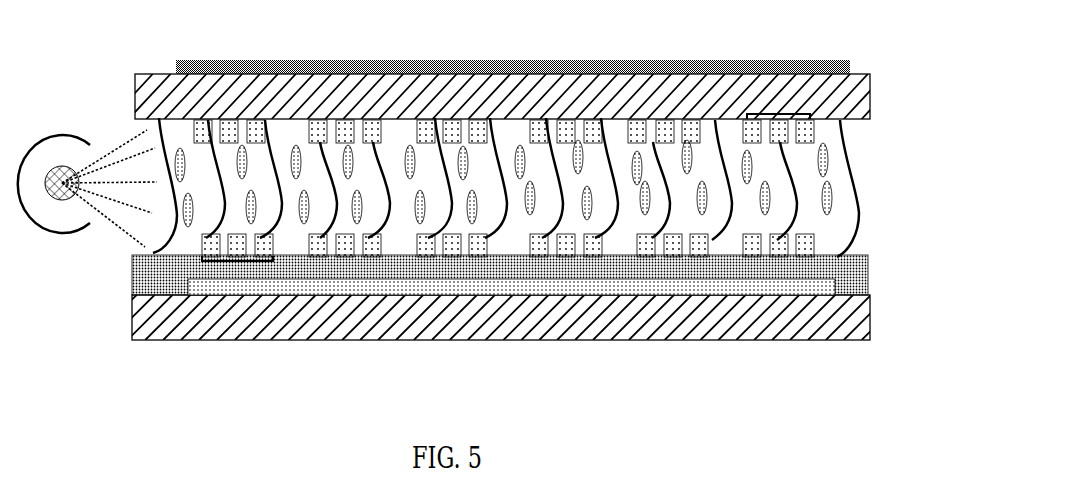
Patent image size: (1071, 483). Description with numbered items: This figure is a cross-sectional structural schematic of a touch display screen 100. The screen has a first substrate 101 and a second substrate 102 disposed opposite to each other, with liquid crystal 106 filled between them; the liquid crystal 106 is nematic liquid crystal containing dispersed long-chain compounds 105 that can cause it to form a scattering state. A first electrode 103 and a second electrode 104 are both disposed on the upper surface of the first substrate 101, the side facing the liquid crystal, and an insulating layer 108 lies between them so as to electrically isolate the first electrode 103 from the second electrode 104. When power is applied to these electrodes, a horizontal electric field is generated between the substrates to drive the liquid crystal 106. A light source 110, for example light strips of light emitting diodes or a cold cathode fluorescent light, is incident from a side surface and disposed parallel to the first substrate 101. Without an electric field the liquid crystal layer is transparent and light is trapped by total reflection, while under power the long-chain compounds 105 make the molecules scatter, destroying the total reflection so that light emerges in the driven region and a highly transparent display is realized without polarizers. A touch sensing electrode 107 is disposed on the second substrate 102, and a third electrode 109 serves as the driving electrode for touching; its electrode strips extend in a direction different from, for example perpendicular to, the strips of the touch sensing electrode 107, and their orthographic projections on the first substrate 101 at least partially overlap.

The touch display screen 100 is at (475, 201).
The first substrate 101 is at (866, 319).
The second substrate 102 is at (871, 90).
The first electrode 103 is at (237, 261).
The second electrode 104 is at (290, 297).
The long-chain compounds 105 is at (158, 118).
The liquid crystal 106 is at (180, 147).
The touch sensing electrode 107 is at (233, 60).
The insulating layer 108 is at (147, 292).
The third electrode 109 is at (812, 113).
The light source 110 is at (78, 165).